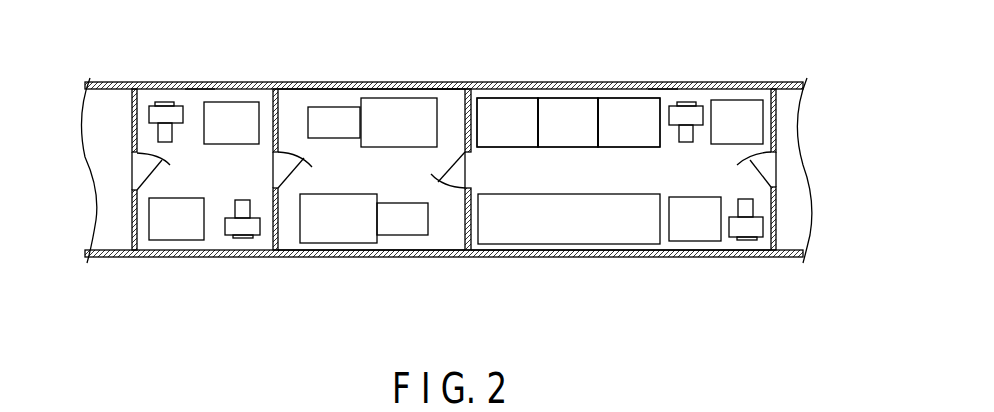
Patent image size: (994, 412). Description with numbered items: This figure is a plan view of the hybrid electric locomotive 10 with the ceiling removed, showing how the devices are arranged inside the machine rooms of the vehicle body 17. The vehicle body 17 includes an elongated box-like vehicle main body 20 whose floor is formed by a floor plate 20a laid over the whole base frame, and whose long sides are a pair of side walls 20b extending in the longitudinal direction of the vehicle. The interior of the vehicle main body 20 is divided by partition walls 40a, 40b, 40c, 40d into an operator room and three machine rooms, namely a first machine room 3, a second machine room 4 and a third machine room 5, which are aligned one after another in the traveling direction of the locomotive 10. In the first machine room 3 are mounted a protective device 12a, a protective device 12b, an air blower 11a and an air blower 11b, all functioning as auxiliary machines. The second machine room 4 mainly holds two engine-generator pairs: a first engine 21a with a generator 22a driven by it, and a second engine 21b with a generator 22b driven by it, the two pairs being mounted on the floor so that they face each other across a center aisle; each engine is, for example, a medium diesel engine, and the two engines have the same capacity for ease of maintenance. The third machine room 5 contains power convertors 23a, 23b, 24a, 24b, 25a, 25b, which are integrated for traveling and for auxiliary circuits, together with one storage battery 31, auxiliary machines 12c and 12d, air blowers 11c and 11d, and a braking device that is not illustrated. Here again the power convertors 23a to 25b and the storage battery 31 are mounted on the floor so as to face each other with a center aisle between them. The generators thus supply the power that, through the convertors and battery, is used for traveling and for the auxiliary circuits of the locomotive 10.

The hybrid electric locomotive 10 is at (113, 84).
The first machine room 3 is at (198, 88).
The vehicle main body 20 is at (444, 83).
The vehicle body 17 is at (662, 82).
The floor plate 20a is at (103, 201).
The side walls 20b is at (288, 82).
The second machine room 4 is at (340, 167).
The third machine room 5 is at (627, 170).
The partition wall 40a is at (132, 222).
The partition wall 40b is at (278, 222).
The partition wall 40c is at (466, 222).
The partition wall 40d is at (776, 222).
The air blower 11a is at (168, 101).
The air blower 11b is at (241, 240).
The air blower 11c is at (688, 101).
The air blower 11d is at (744, 241).
The protective device 12a is at (238, 101).
The protective device 12b is at (171, 242).
The auxiliary machine 12c is at (740, 99).
The auxiliary machine 12d is at (693, 243).
The first engine 21a is at (404, 103).
The second engine 21b is at (339, 245).
The generator 22a is at (347, 117).
The generator 22b is at (399, 237).
The power convertor 23a is at (509, 97).
The power convertor 23b is at (509, 97).
The power convertor 24a is at (570, 97).
The power convertor 24b is at (570, 97).
The power convertor 25a is at (616, 97).
The power convertor 25b is at (616, 97).
The storage battery 31 is at (571, 245).